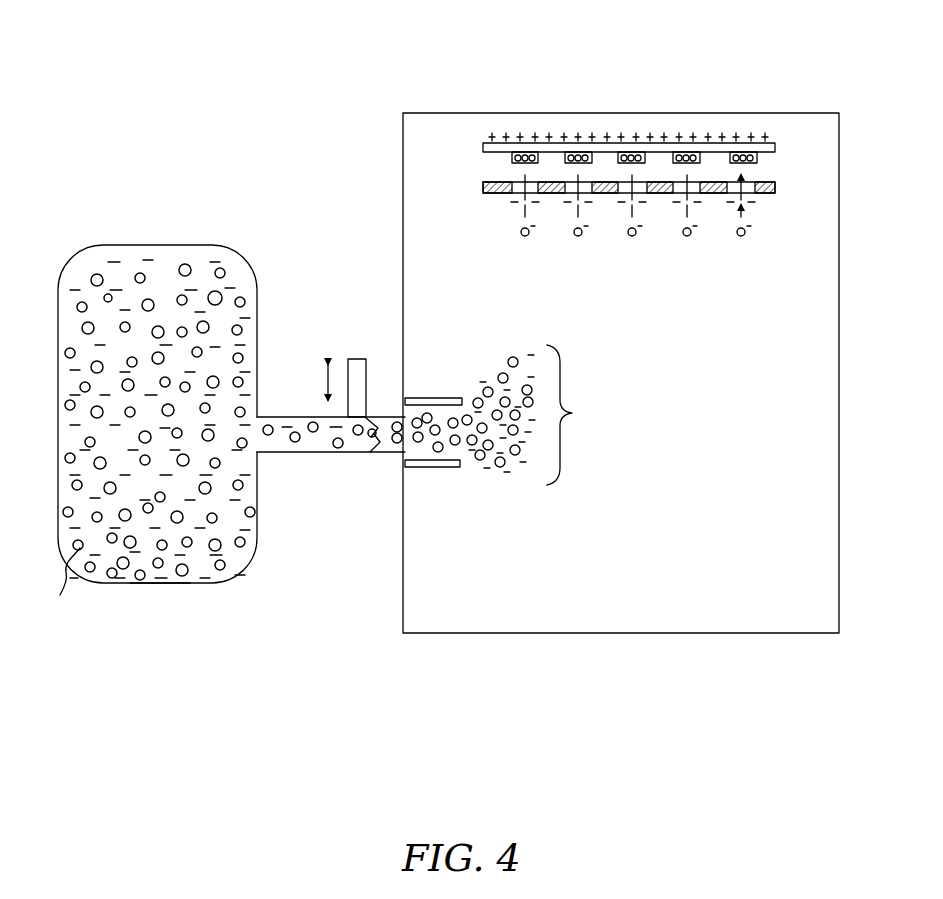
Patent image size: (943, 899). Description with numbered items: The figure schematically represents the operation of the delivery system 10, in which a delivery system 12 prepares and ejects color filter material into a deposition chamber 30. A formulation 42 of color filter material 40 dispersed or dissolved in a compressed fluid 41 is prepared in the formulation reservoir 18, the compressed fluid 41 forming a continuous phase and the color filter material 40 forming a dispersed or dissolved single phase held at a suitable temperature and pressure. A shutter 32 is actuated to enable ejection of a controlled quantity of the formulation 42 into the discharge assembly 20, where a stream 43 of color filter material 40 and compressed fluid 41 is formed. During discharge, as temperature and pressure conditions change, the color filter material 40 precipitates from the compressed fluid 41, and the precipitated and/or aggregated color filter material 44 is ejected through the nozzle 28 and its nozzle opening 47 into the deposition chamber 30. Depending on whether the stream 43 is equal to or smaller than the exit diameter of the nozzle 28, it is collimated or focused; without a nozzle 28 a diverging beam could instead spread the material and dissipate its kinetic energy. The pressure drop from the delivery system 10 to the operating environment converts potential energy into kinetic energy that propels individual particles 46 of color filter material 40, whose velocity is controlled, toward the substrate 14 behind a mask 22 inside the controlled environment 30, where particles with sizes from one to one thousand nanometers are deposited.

The delivery system 10 is at (343, 108).
The delivery system 12 is at (236, 220).
The substrate 14 is at (776, 150).
The formulation reservoir 18 is at (175, 585).
The discharge assembly 20 is at (382, 416).
The mask 22 is at (776, 187).
The nozzle 28 is at (428, 472).
The deposition chamber 30 is at (552, 113).
The shutter 32 is at (357, 364).
The color filter material 40 is at (92, 274).
The compressed fluid 41 is at (147, 264).
The formulation 42 is at (118, 574).
The stream 43 is at (440, 420).
The precipitated and/or aggregated color filter material 44 is at (575, 415).
The color filter material particles 46 is at (632, 237).
The nozzle opening 47 is at (456, 452).